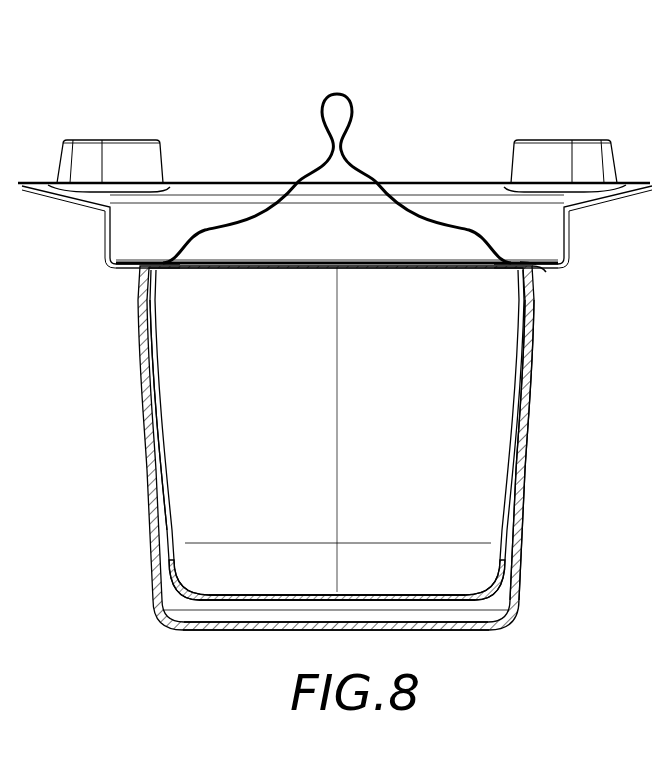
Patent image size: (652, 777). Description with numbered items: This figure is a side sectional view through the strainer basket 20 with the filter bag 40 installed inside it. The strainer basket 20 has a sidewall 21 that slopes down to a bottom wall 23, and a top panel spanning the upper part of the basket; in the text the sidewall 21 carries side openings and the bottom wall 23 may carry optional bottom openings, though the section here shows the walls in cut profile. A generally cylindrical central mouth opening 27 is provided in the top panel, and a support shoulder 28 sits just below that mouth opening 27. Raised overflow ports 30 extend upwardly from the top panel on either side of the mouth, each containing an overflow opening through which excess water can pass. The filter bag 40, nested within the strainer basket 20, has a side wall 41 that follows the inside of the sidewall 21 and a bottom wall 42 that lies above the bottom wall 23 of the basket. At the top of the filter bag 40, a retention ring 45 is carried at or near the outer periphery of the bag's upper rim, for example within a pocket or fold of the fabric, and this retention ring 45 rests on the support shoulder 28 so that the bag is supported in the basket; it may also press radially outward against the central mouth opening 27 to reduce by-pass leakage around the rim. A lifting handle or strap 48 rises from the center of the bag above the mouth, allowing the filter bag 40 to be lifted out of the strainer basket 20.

The strainer basket 20 is at (548, 348).
The sidewall 21 is at (528, 445).
The bottom wall 23 is at (442, 632).
The central mouth opening 27 is at (564, 222).
The support shoulder 28 is at (546, 276).
The raised overflow port 30 is at (119, 153).
The filter bag 40 is at (186, 480).
The side wall 41 is at (161, 433).
The bottom wall 42 is at (270, 601).
The retention ring 45 is at (540, 262).
The lifting handle or strap 48 is at (323, 110).